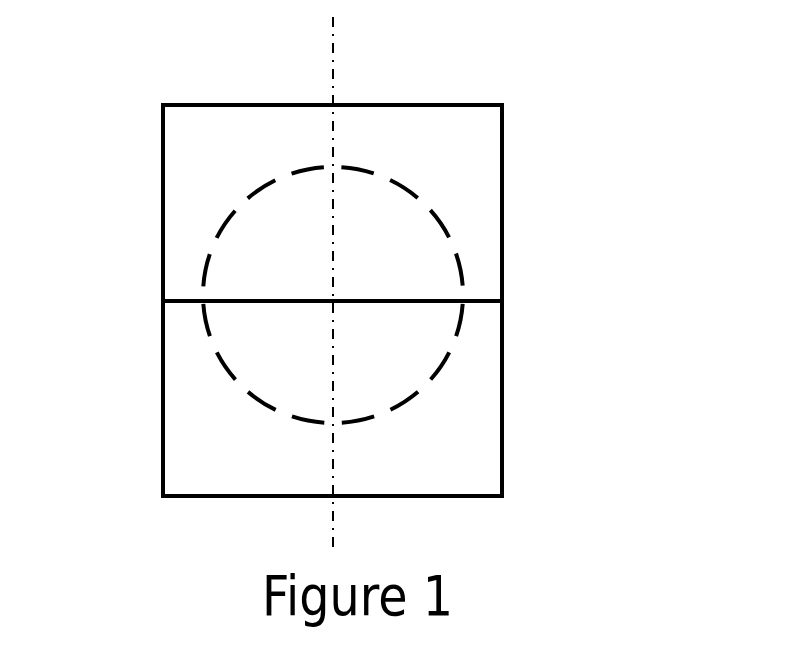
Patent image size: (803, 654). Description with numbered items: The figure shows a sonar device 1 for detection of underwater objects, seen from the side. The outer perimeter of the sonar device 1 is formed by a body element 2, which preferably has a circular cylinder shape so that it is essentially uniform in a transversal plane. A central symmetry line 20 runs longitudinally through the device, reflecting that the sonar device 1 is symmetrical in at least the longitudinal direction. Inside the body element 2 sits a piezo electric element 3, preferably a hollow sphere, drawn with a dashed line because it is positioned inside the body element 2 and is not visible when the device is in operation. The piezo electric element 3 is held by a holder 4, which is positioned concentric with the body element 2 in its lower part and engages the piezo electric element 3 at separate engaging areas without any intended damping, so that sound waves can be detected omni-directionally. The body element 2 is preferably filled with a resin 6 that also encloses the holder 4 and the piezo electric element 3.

The sonar device 1 is at (371, 276).
The body element 2 is at (502, 217).
The piezo electric element 3 is at (423, 205).
The holder 4 is at (540, 362).
The resin 6 is at (183, 154).
The central symmetry line 20 is at (332, 57).